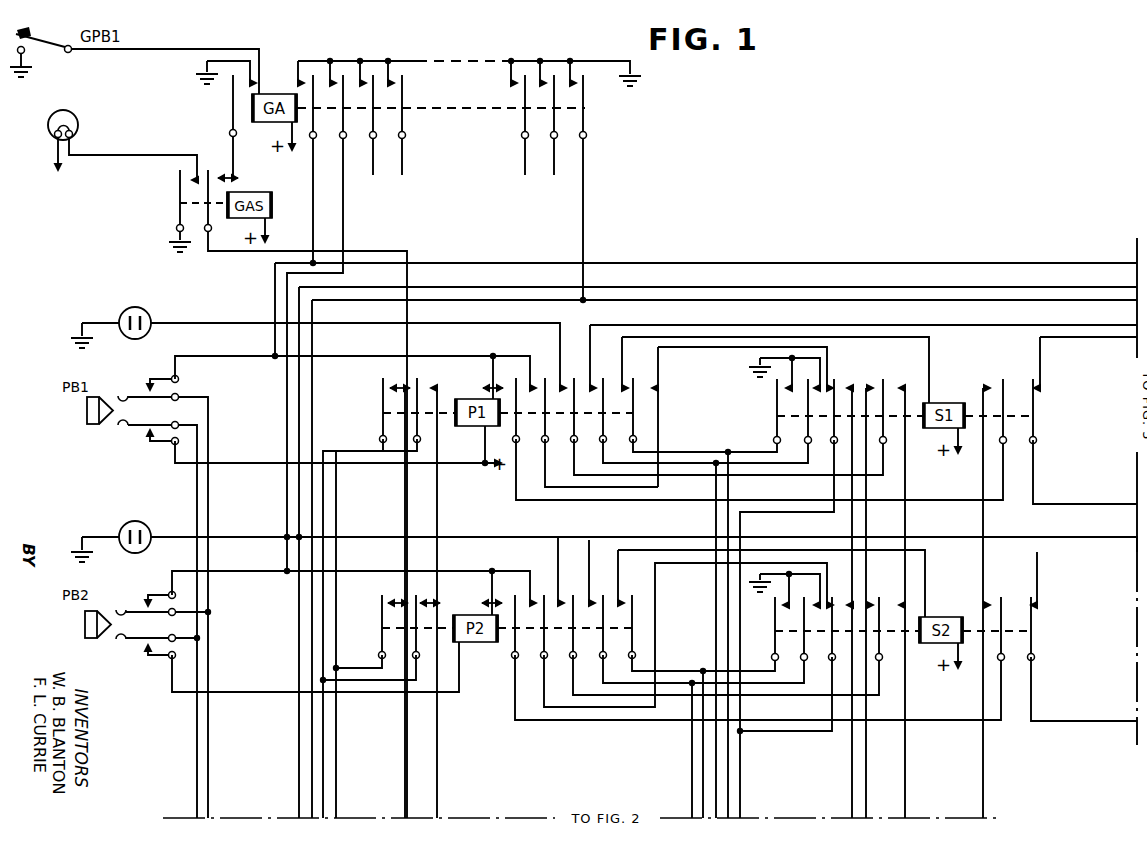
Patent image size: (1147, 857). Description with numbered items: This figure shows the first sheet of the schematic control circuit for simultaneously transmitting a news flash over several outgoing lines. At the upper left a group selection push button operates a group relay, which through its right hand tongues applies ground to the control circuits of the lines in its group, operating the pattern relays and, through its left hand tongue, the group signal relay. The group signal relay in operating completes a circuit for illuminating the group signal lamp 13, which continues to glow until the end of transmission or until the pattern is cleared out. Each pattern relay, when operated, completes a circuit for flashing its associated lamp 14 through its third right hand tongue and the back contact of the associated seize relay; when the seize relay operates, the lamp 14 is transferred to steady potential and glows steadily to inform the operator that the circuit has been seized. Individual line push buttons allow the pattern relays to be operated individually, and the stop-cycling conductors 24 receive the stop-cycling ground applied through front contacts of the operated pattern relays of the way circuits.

The group signal lamp 13 is at (48, 128).
The lamp 14 is at (130, 307).
The stop-cycling conductor 24 is at (589, 345).